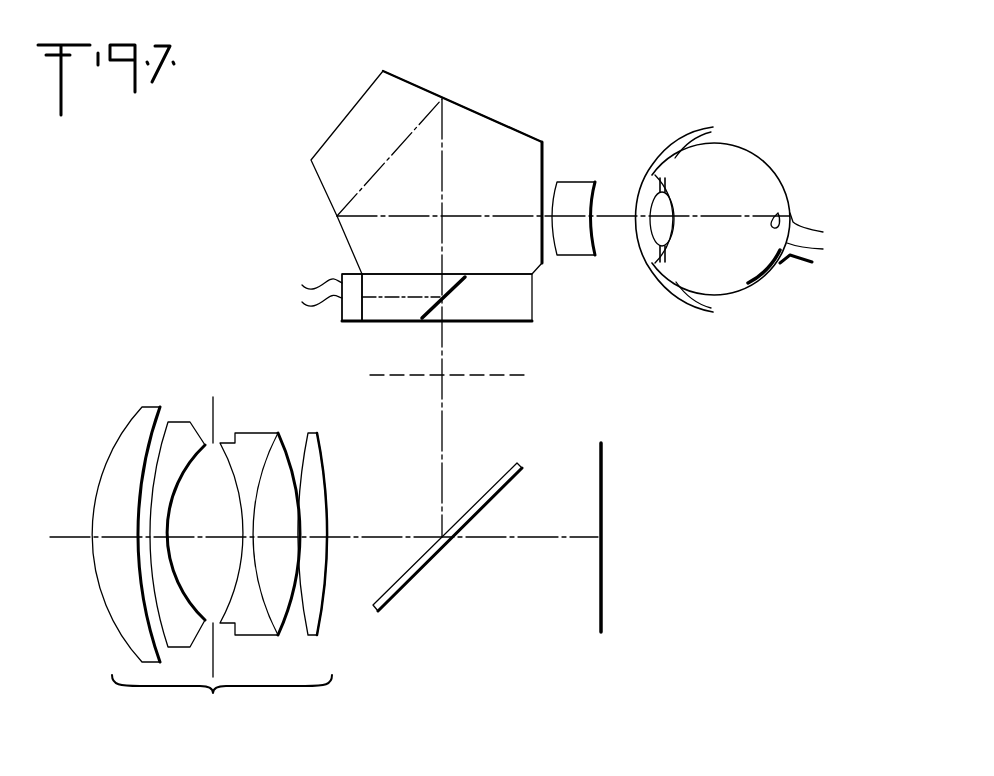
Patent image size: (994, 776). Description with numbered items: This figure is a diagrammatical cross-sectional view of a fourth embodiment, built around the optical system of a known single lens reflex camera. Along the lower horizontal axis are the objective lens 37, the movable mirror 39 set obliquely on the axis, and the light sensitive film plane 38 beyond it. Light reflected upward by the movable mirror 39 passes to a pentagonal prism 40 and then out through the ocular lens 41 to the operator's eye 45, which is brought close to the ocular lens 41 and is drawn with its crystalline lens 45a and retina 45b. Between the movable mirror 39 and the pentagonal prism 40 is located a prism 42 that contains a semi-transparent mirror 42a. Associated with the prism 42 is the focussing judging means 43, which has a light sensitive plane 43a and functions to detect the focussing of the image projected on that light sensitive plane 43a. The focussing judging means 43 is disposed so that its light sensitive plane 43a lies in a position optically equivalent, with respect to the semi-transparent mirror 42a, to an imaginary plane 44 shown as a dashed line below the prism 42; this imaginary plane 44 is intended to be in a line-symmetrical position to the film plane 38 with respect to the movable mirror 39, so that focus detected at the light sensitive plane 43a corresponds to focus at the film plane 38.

The objective lens 37 is at (214, 695).
The light sensitive film plane 38 is at (604, 500).
The movable mirror 39 is at (503, 484).
The pentagonal prism 40 is at (488, 125).
The ocular lens 41 is at (568, 190).
The prism 42 is at (523, 307).
The semi-transparent mirror 42a is at (462, 285).
The focussing judging means 43 is at (347, 320).
The light sensitive plane 43a is at (380, 314).
The imaginary plane 44 is at (500, 377).
The operator's eye 45 is at (747, 162).
The crystalline lens 45a is at (670, 236).
The retina 45b is at (778, 214).